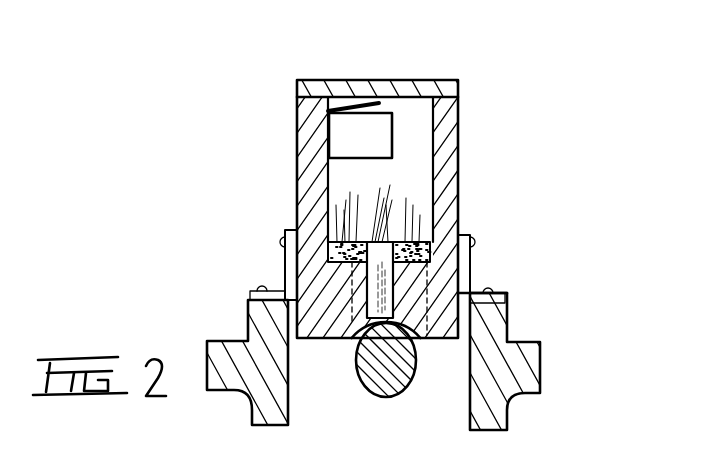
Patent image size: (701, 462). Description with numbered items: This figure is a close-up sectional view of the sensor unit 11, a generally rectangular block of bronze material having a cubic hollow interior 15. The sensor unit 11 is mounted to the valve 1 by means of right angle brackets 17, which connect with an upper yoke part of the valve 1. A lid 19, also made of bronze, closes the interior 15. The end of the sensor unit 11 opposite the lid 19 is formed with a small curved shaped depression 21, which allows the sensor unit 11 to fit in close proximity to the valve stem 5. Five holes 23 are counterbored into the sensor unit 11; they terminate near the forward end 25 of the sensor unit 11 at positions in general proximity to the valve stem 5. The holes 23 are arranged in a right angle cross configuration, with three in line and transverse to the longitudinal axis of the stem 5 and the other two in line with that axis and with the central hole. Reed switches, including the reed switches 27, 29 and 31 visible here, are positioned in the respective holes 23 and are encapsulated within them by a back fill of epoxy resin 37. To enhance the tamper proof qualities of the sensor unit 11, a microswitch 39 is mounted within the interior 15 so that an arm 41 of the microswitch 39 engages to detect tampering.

The valve 1 is at (207, 340).
The valve stem 5 is at (372, 394).
The sensor unit 11 is at (455, 160).
The interior 15 is at (462, 110).
The right angle brackets 17 is at (283, 270).
The lid 19 is at (420, 80).
The curved shaped depression 21 is at (352, 345).
The holes 23 is at (322, 268).
The forward end 25 is at (435, 328).
The reed switch 27 is at (370, 238).
The reed switch 29 is at (362, 210).
The reed switch 31 is at (458, 222).
The epoxy resin 37 is at (330, 248).
The microswitch 39 is at (372, 141).
The arm 41 is at (352, 108).